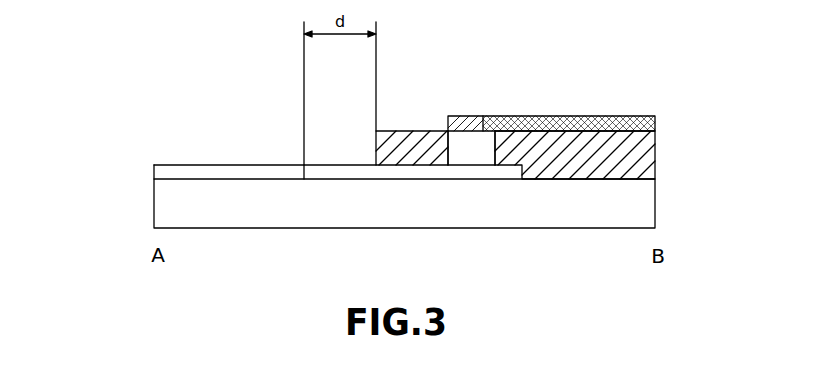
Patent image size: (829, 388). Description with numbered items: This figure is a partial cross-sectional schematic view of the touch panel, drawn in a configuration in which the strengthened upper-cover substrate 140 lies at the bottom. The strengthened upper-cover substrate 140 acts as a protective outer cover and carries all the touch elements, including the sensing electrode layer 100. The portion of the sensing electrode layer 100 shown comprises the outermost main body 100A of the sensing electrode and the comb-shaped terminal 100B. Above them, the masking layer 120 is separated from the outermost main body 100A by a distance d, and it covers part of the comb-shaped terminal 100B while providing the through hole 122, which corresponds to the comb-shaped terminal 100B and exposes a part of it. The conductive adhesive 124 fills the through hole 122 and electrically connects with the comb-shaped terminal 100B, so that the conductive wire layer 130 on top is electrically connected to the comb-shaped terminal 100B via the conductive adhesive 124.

The sensing electrode layer 100 is at (399, 125).
The outermost main body of sensing electrode 100A is at (227, 173).
The comb-shaped terminal 100B is at (334, 173).
The masking layer 120 is at (443, 100).
The through hole 122 is at (476, 126).
The conductive adhesive 124 is at (484, 138).
The conductive wire layer 130 is at (584, 78).
The strengthened upper-cover substrate 140 is at (637, 203).